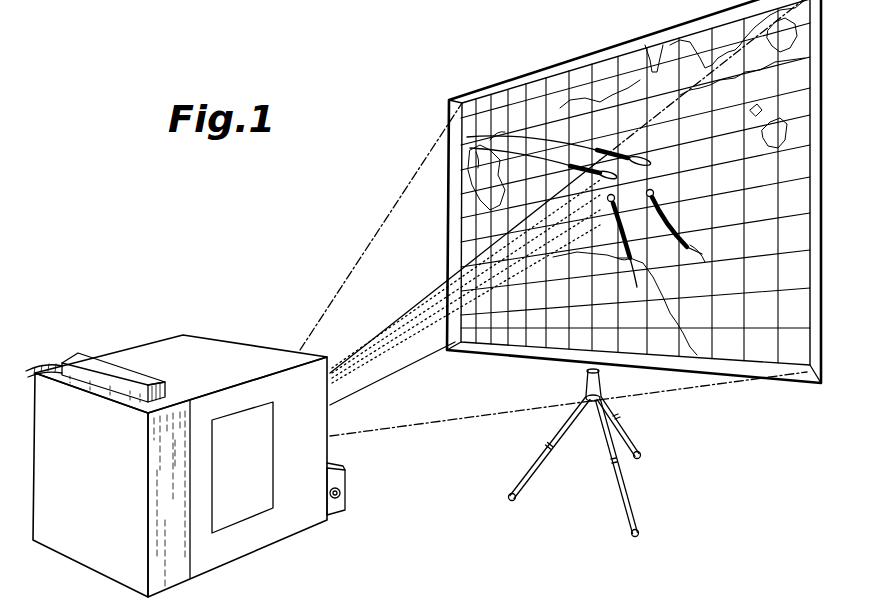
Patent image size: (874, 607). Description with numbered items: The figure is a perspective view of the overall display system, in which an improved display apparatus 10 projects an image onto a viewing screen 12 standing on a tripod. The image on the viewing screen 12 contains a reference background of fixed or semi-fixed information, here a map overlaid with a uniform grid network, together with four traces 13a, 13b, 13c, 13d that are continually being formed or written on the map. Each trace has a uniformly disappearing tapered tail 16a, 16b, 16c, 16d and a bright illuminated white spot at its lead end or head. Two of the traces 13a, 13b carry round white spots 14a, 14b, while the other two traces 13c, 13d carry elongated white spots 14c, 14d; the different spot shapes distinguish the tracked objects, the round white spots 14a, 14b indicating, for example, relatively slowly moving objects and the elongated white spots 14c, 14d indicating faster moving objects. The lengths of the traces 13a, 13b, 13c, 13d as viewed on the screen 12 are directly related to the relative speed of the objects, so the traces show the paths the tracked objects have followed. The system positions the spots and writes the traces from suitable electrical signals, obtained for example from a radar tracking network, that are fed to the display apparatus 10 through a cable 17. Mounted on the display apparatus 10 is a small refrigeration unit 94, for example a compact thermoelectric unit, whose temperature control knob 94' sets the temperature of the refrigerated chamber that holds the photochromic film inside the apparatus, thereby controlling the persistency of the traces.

The display apparatus 10 is at (194, 316).
The viewing screen 12 is at (516, 364).
The trace 13a is at (662, 206).
The trace 13b is at (621, 219).
The trace 13c is at (626, 147).
The trace 13d is at (577, 170).
The round white spot 14a is at (655, 191).
The round white spot 14b is at (615, 198).
The elongated white spot 14c is at (643, 156).
The elongated white spot 14d is at (605, 184).
The tapered tail 16a is at (690, 242).
The tapered tail 16b is at (631, 268).
The tapered tail 16c is at (497, 138).
The tapered tail 16d is at (481, 153).
The cable 17 is at (36, 362).
The refrigeration unit 94 is at (349, 489).
The temperature control knob 94' is at (353, 497).